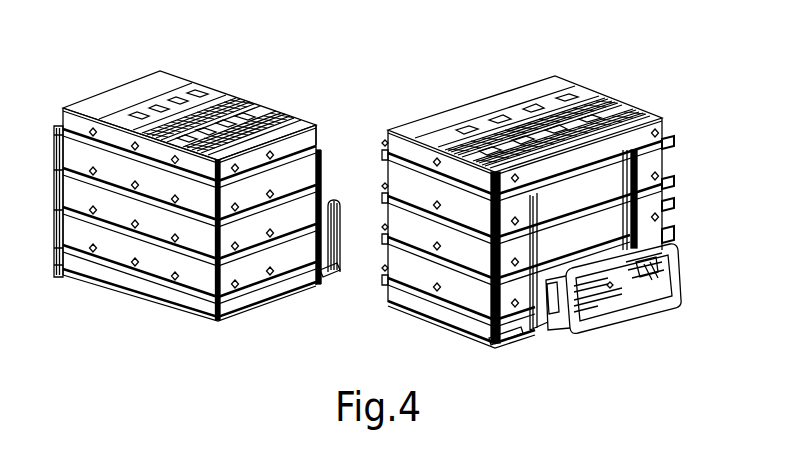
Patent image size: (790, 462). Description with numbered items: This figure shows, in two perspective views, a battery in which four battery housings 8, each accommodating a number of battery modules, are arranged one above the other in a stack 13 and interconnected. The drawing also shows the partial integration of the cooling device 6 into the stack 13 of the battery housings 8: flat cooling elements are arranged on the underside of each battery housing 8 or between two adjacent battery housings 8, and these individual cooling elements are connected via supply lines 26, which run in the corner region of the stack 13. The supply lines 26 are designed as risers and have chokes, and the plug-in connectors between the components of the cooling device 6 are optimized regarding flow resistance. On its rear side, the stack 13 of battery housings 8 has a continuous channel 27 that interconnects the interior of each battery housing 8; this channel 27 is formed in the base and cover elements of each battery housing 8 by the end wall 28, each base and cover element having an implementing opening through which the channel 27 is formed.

The stack 13 is at (253, 80).
The battery housing 8 is at (280, 150).
The supply line 26 is at (57, 245).
The continuous channel 27 is at (635, 100).
The end wall 28 is at (674, 237).
The cooling device 6 is at (515, 350).